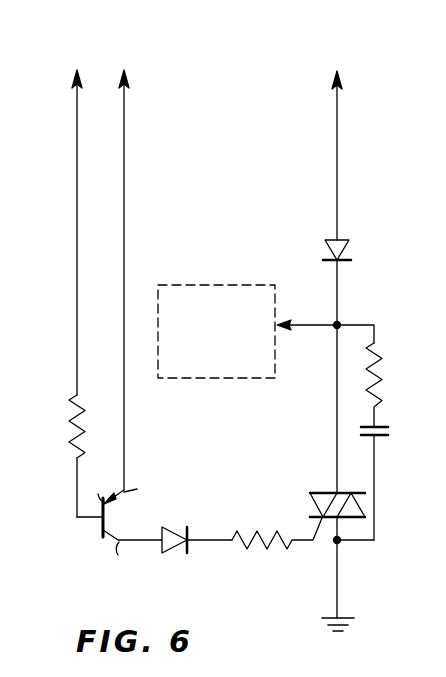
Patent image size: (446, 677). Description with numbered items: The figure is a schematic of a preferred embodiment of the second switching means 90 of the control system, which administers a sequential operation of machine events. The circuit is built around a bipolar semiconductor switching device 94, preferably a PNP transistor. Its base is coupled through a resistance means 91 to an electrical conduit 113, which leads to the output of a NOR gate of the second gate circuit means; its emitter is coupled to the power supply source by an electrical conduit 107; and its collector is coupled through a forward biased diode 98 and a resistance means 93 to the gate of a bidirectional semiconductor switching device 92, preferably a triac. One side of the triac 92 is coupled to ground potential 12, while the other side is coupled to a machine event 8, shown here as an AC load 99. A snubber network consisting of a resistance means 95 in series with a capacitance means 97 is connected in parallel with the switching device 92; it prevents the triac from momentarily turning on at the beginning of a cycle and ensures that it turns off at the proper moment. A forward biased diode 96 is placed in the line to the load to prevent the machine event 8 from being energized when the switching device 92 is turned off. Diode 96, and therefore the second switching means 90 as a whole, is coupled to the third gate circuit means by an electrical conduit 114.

The electrical conduit 113 is at (72, 283).
The electrical conduit 107 is at (120, 270).
The electrical conduit 114 is at (333, 144).
The second switching means 90 is at (222, 203).
The machine event 8 is at (178, 284).
The AC load 99 is at (250, 290).
The forward biased diode 96 is at (341, 262).
The resistance means 95 is at (382, 358).
The capacitance means 97 is at (378, 437).
The bidirectional semiconductor switching device 92 is at (326, 492).
The ground potential 12 is at (340, 613).
The resistance means 91 is at (85, 433).
The bipolar semiconductor switching device 94 is at (103, 528).
The forward biased diode 98 is at (177, 535).
The resistance means 93 is at (262, 530).